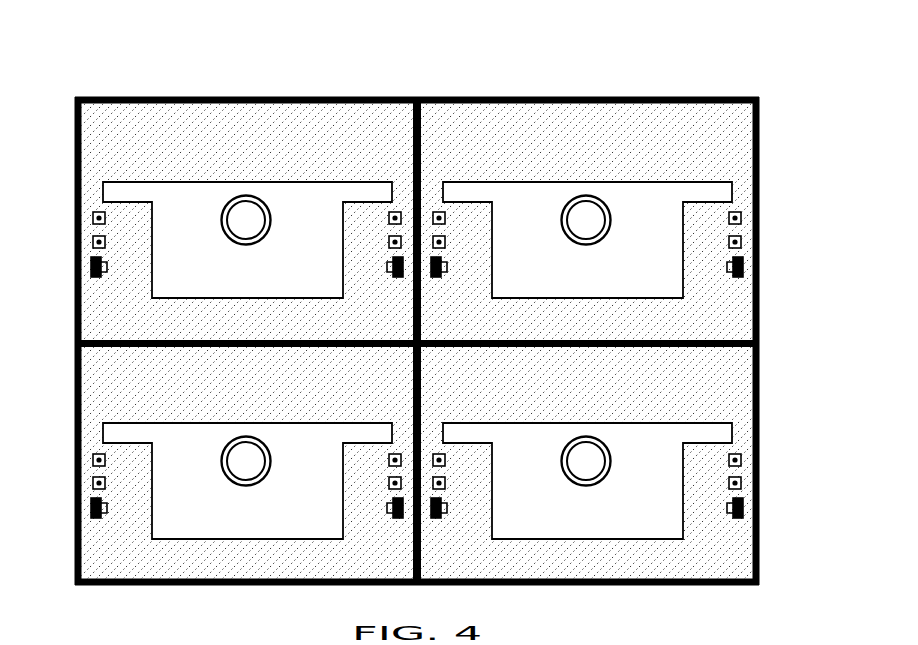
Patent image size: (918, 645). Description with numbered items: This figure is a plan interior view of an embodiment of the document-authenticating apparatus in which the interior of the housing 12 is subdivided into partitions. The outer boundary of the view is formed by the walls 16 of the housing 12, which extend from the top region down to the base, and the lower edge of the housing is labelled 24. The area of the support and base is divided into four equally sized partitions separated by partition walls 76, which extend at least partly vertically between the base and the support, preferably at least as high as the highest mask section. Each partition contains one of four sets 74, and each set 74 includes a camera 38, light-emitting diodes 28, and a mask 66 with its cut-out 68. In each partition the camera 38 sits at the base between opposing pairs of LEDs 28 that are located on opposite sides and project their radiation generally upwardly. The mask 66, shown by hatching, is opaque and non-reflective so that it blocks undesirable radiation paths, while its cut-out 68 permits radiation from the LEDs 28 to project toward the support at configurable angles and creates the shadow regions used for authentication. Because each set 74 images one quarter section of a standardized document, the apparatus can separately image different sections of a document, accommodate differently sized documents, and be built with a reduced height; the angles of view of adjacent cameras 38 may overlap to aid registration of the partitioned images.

The housing 12 is at (760, 146).
The walls 16 is at (178, 98).
The bottom rail 24 is at (417, 613).
The light-emitting diodes 28 is at (745, 460).
The camera 38 is at (268, 229).
The mask 66 is at (258, 125).
The cut-out 68 is at (293, 210).
The sets 74 is at (397, 326).
The partition walls 76 is at (423, 135).